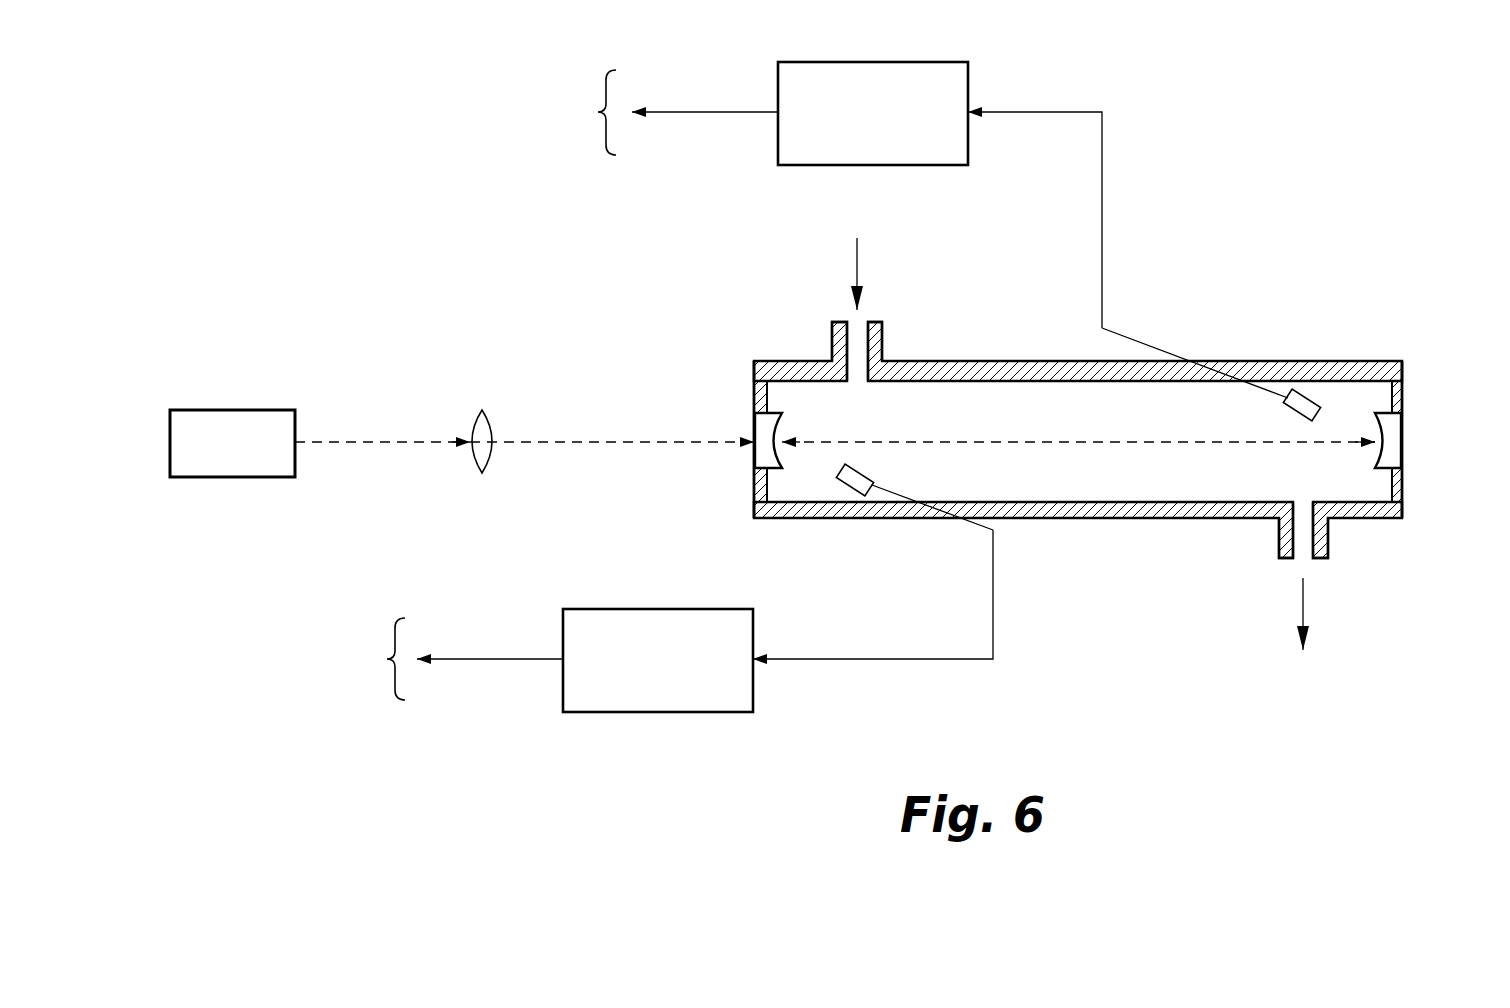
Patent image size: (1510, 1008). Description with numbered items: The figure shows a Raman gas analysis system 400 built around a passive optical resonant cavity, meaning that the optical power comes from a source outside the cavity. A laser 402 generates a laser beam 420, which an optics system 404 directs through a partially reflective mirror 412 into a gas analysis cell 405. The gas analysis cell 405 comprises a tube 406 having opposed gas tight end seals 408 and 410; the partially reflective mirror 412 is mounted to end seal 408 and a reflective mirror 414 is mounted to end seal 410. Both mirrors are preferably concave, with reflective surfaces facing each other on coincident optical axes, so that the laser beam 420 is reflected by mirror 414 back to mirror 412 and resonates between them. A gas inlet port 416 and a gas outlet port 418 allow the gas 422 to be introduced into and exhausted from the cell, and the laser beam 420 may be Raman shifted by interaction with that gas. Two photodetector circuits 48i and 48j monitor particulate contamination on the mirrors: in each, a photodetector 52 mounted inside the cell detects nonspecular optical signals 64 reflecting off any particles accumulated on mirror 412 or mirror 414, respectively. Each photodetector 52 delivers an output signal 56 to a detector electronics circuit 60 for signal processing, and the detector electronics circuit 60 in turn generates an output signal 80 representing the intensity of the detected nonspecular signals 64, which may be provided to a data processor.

The Raman gas analysis system 400 is at (368, 200).
The laser 402 is at (258, 410).
The optics system 404 is at (484, 412).
The gas analysis cell 405 is at (1093, 531).
The tube 406 is at (940, 361).
The end seal 408 is at (754, 390).
The end seal 410 is at (1400, 490).
The partially reflective mirror 412 is at (754, 455).
The reflective mirror 414 is at (1395, 425).
The gas inlet port 416 is at (862, 322).
The gas outlet port 418 is at (1310, 558).
The laser beam 420 is at (366, 441).
The gas 422 is at (857, 262).
The photodetector 52 is at (1289, 411).
The output signal 56 is at (1102, 200).
The detector electronics circuit 60 is at (918, 62).
The nonspecular optical signals 64 is at (1330, 414).
The output signal 80 is at (708, 112).
The photodetector circuit 48i is at (370, 659).
The photodetector circuit 48j is at (580, 112).